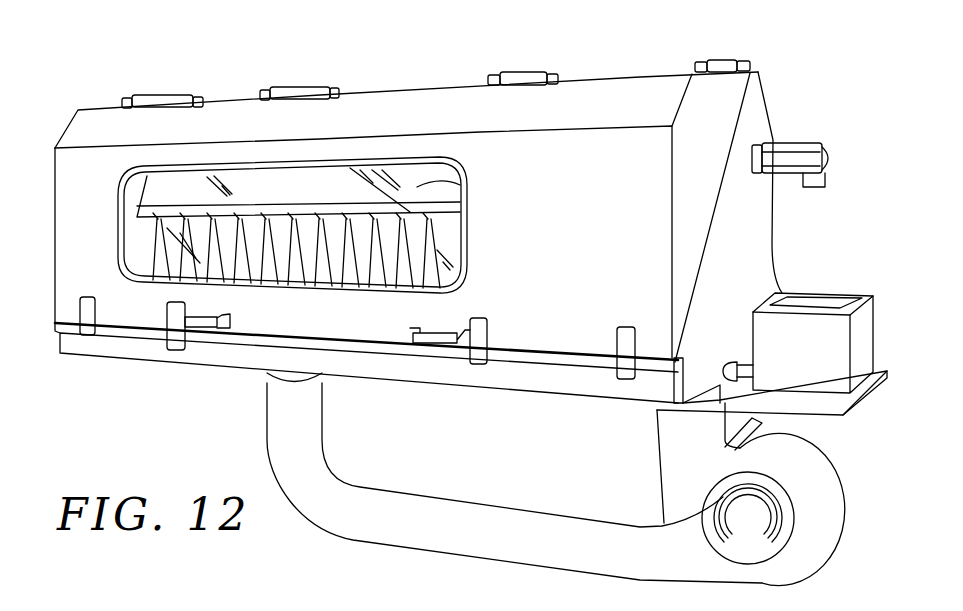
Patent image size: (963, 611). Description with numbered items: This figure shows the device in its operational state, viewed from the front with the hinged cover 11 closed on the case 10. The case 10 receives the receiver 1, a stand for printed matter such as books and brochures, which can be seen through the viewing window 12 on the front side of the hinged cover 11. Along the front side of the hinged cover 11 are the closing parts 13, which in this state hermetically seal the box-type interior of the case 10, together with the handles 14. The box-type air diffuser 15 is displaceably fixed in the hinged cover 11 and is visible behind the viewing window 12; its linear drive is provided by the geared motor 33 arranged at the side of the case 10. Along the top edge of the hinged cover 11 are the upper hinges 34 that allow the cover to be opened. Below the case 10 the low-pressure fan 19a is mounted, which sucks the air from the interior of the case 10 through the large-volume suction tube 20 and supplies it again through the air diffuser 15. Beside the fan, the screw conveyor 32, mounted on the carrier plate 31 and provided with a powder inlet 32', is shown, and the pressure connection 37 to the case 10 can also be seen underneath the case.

The receiver 1 is at (150, 247).
The case 10 is at (743, 222).
The hinged cover 11 is at (428, 118).
The viewing window 12 is at (458, 183).
The closing parts 13 is at (90, 305).
The handles 14 is at (202, 328).
The box-type air diffuser 15 is at (173, 190).
The low-pressure fan 19a is at (822, 510).
The suction tube 20 is at (507, 522).
The carrier plate 31 is at (850, 407).
The screw conveyor 32 is at (813, 317).
The powder inlet 32' is at (730, 340).
The geared motor 33 is at (803, 143).
The upper hinges 34 is at (157, 100).
The pressure connection 37 is at (695, 432).